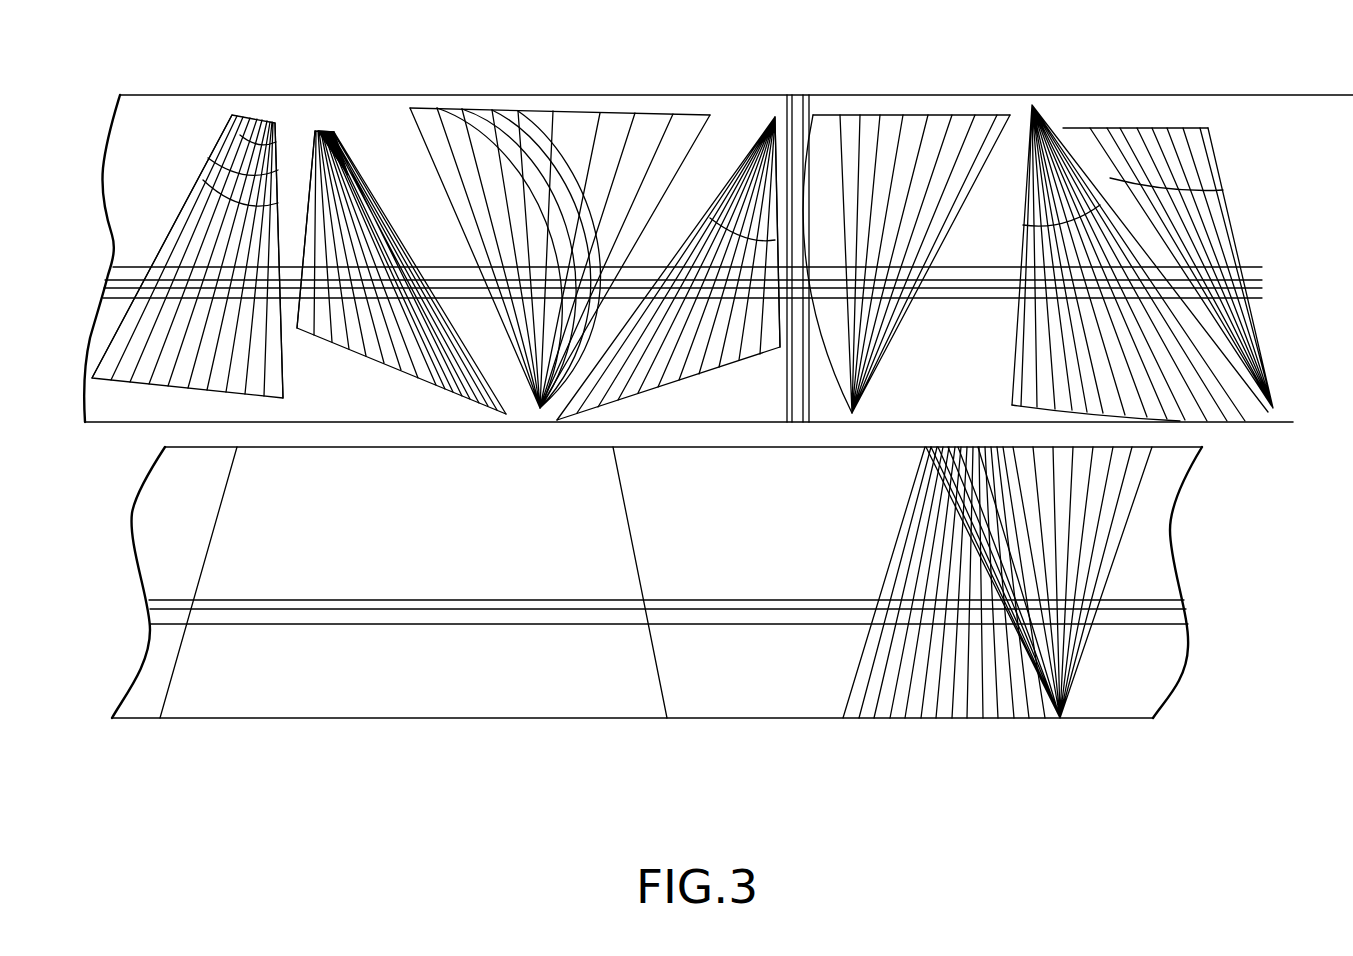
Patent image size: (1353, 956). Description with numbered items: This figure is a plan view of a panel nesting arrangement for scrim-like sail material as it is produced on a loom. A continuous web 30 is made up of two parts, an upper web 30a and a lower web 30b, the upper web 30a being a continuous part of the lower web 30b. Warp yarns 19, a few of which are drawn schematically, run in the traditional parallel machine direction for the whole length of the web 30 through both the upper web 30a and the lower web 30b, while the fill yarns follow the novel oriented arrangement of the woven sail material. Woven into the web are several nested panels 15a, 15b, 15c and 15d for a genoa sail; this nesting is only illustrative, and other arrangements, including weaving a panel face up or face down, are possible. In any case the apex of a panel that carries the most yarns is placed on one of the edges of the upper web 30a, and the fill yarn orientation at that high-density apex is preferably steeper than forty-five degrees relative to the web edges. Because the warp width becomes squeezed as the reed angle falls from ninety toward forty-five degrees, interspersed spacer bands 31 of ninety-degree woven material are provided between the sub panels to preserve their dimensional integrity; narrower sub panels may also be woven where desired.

The nested panel 15a is at (1060, 720).
The nested panel 15b is at (920, 720).
The nested panel 15c is at (733, 720).
The nested panel 15d is at (375, 720).
The warp yarns 19 is at (976, 266).
The continuous web 30 is at (130, 720).
The upper web 30a is at (1123, 94).
The lower web 30b is at (253, 720).
The spacer bands 31 is at (808, 91).